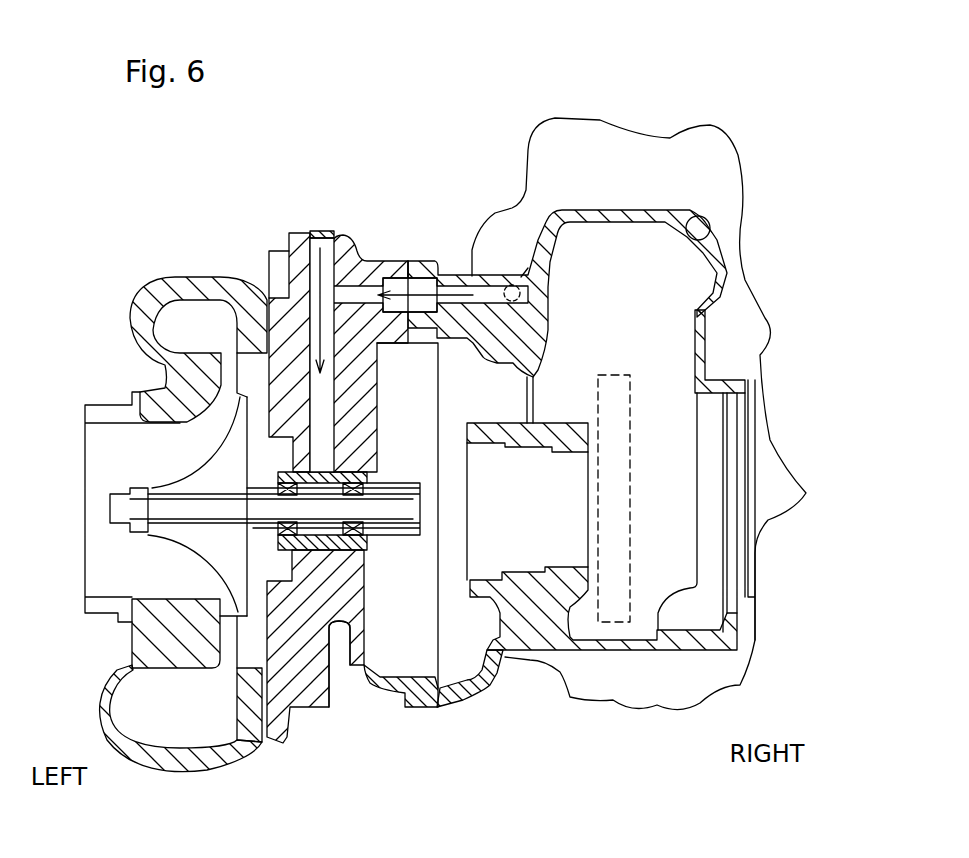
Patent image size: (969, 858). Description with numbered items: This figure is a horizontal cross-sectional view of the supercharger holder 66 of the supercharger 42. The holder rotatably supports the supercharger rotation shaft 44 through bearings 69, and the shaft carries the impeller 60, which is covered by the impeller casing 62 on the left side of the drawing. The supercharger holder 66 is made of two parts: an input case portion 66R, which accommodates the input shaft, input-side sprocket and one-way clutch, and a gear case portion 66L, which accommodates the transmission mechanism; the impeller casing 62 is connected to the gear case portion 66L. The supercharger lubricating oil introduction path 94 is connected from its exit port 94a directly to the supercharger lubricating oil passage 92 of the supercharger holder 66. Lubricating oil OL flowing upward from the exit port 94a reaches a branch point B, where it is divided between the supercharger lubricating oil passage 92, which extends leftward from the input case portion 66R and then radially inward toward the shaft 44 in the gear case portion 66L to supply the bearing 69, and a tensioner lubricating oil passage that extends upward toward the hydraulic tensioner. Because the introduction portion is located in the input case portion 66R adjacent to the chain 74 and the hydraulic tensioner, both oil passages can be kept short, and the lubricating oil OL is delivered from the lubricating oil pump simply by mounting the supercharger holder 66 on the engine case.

The supercharger 42 is at (768, 203).
The supercharger rotation shaft 44 is at (173, 512).
The impeller 60 is at (192, 485).
The impeller casing 62 is at (182, 279).
The supercharger holder 66 is at (520, 381).
The gear case portion 66L is at (360, 237).
The input case portion 66R is at (733, 140).
The bearings 69 is at (280, 552).
The chain 74 is at (631, 483).
The supercharger lubricating oil passage 92 is at (313, 233).
The supercharger lubricating oil introduction path 94 is at (431, 184).
The exit port 94a is at (513, 288).
The lubricating oil OL is at (400, 298).
The branch point B is at (520, 277).